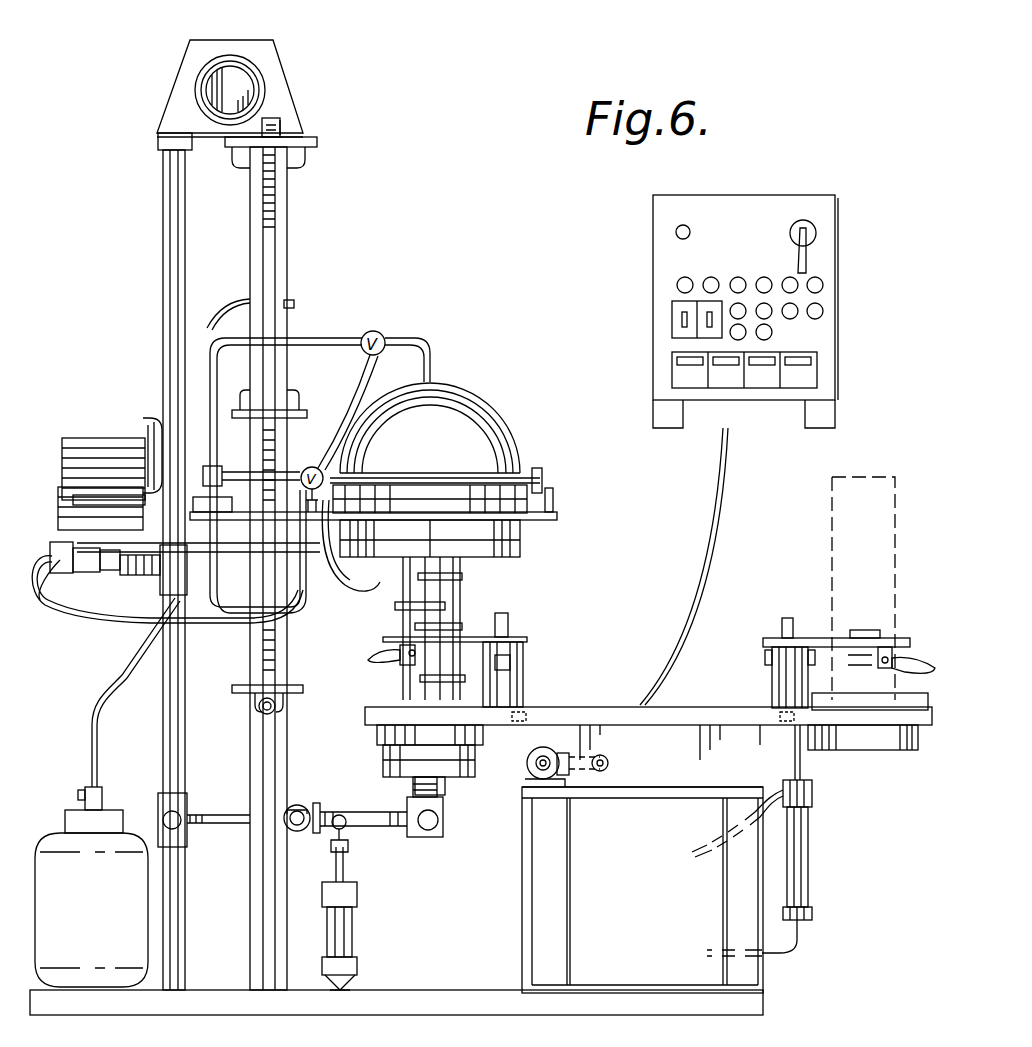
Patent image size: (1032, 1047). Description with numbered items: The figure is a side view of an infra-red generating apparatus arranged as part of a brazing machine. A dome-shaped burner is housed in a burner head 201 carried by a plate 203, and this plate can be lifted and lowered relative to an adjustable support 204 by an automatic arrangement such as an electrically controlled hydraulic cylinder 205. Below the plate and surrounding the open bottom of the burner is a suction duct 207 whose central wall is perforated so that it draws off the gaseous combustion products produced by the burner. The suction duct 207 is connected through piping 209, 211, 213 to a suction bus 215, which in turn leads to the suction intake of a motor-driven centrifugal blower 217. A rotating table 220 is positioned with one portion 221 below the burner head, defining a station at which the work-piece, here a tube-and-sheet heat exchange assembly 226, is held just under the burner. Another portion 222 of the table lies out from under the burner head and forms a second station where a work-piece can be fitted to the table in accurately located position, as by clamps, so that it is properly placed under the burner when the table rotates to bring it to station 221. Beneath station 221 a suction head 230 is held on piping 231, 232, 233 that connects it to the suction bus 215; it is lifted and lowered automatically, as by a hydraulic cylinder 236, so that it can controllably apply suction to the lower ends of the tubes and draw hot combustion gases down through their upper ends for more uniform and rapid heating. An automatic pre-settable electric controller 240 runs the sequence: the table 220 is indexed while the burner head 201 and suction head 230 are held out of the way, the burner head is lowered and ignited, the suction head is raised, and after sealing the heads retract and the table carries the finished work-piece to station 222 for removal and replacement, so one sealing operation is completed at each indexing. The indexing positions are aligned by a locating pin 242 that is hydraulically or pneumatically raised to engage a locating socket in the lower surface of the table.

The burner head 201 is at (473, 435).
The plate 203 is at (557, 516).
The adjustable support 204 is at (312, 432).
The hydraulic cylinder 205 is at (262, 290).
The suction duct 207 is at (522, 545).
The piping 209 is at (338, 568).
The piping 211 is at (50, 560).
The piping 213 is at (150, 580).
The suction bus 215 is at (166, 242).
The motor-driven centrifugal blower 217 is at (272, 82).
The rotating table 220 is at (752, 698).
The table portion (sealing station) 221 is at (358, 710).
The table portion (loading station) 222 is at (912, 725).
The tube-and-sheet heat exchange assembly 226 is at (462, 595).
The suction head 230 is at (530, 773).
The piping 231 is at (402, 815).
The piping 232 is at (297, 805).
The piping 233 is at (220, 815).
The hydraulic cylinder 236 is at (342, 930).
The automatic pre-settable electric controller 240 is at (817, 342).
The locating pin 242 is at (815, 795).